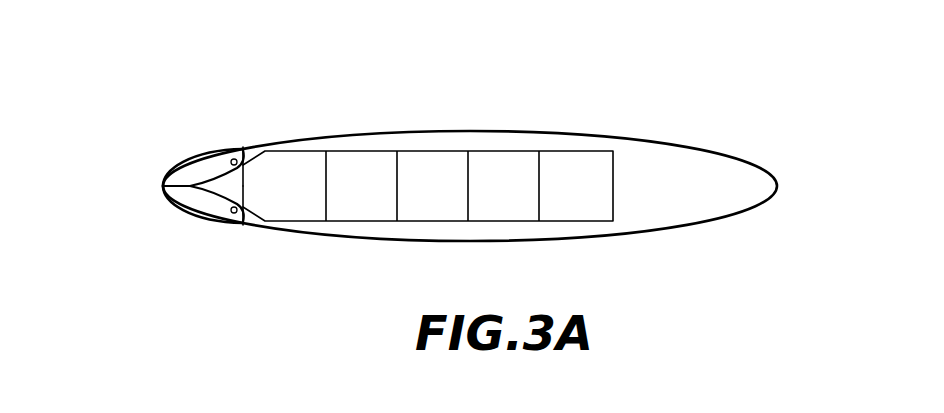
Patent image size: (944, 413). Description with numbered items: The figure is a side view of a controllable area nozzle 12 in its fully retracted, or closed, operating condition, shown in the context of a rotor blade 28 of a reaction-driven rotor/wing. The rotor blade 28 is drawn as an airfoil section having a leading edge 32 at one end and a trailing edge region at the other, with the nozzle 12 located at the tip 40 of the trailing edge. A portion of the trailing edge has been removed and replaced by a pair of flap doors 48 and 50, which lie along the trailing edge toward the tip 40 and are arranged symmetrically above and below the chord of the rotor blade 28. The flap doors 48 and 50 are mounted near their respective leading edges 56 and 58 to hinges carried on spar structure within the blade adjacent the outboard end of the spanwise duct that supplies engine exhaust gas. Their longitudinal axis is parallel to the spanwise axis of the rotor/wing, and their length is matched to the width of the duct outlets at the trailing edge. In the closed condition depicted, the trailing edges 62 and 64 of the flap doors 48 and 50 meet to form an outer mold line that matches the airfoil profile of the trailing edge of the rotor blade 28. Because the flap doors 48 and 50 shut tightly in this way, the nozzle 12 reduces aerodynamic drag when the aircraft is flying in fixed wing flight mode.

The controllable area nozzle 12 is at (166, 185).
The rotor blade 28 is at (461, 187).
The leading edge 32 is at (794, 147).
The tip 40 is at (316, 287).
The flap door 48 is at (183, 143).
The flap door 50 is at (183, 228).
The leading edge 56 is at (243, 148).
The leading edge 58 is at (243, 225).
The trailing edge 62 is at (173, 172).
The trailing edge 64 is at (173, 200).